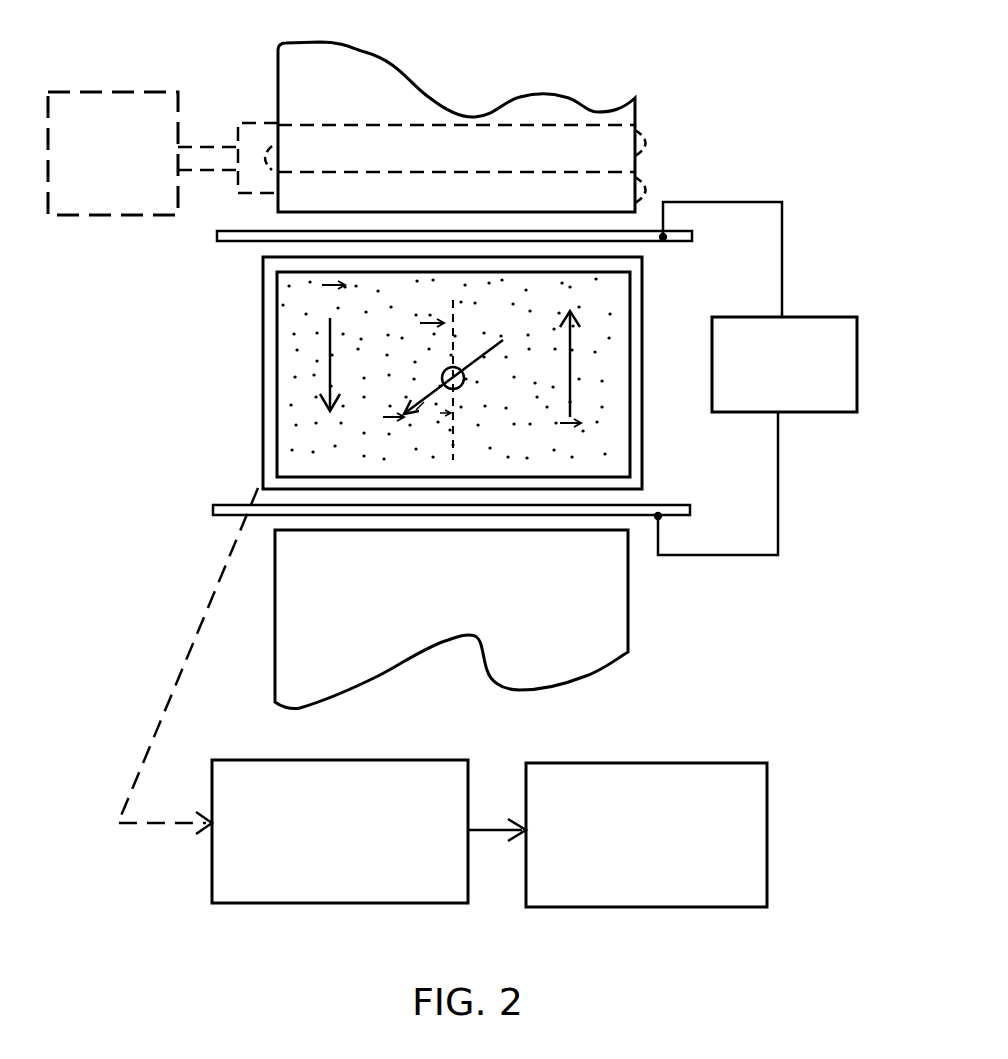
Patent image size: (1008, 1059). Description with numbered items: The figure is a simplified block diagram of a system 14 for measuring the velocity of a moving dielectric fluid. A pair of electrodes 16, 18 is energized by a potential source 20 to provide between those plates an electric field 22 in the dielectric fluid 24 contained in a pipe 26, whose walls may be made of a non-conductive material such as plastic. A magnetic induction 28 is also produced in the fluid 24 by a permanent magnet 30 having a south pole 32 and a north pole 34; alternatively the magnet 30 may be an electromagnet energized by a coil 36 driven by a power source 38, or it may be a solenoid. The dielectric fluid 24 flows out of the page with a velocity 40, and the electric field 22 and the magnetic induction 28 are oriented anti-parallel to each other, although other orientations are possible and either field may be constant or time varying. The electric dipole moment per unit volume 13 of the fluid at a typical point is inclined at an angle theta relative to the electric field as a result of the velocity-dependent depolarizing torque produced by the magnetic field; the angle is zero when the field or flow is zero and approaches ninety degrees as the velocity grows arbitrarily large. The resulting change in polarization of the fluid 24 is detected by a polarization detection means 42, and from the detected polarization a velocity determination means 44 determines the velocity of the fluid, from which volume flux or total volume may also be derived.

The electric dipole moment per unit volume 13 is at (492, 355).
The system 14 is at (122, 391).
The electrode 16 is at (677, 244).
The electrode 18 is at (673, 505).
The potential source 20 is at (712, 366).
The electric field 22 is at (327, 362).
The dielectric fluid 24 is at (432, 308).
The pipe 26 is at (263, 344).
The magnetic induction 28 is at (572, 358).
The permanent magnet 30 is at (643, 108).
The south pole 32 is at (590, 199).
The north pole 34 is at (585, 566).
The coil 36 is at (262, 122).
The power source 38 is at (100, 92).
The velocity 40 is at (467, 384).
The polarization detection means 42 is at (380, 760).
The velocity determination means 44 is at (667, 762).